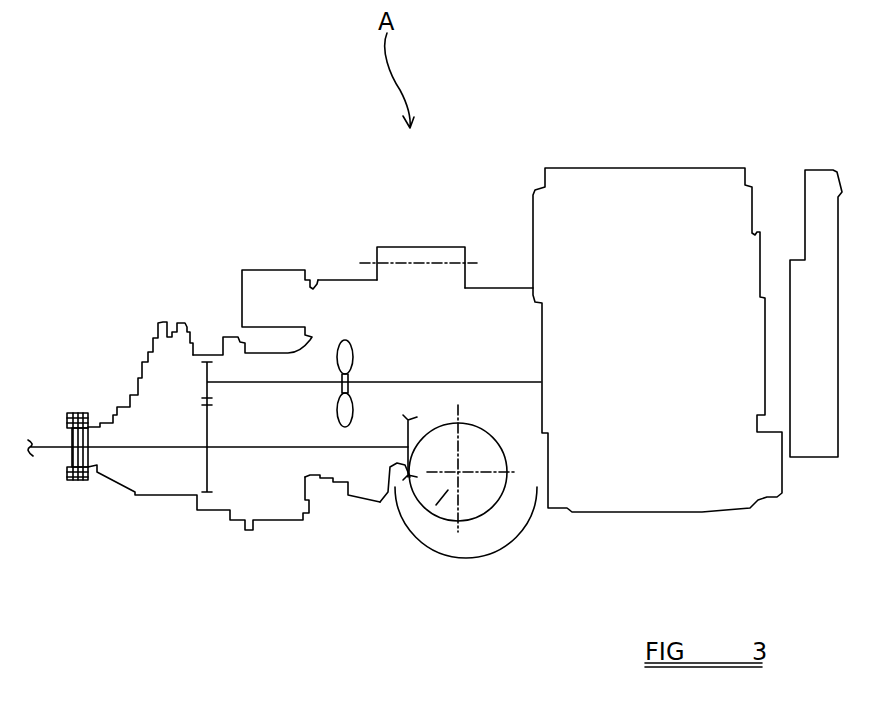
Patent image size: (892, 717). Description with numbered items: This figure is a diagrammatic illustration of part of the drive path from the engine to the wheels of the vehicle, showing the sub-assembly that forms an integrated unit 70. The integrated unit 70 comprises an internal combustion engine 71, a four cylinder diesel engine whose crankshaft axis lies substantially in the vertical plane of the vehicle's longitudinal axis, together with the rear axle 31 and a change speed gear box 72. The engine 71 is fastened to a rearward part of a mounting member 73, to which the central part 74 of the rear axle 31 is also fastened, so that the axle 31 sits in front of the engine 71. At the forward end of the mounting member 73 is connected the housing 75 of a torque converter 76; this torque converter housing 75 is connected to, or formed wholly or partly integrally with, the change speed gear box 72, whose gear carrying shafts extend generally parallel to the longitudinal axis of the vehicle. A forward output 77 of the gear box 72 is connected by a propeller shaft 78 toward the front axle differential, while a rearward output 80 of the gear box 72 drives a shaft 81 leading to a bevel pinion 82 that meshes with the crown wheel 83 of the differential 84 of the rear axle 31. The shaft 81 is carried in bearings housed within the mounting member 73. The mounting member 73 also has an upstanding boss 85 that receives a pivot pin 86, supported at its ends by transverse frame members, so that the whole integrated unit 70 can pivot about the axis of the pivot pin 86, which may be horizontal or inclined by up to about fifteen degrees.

The rear axle 31 is at (442, 498).
The integrated unit 70 is at (425, 167).
The internal combustion engine 71 is at (623, 168).
The change speed gear box 72 is at (230, 517).
The mounting member 73 is at (497, 288).
The central part of the rear axle 74 is at (499, 552).
The housing of the torque converter 75 is at (318, 282).
The torque converter 76 is at (343, 340).
The forward output 77 is at (82, 480).
The propeller shaft 78 is at (50, 450).
The rearward output 80 is at (255, 452).
The shaft 81 is at (308, 450).
The bevel pinion 82 is at (390, 480).
The crown wheel 83 is at (493, 510).
The differential 84 is at (453, 534).
The upstanding boss 85 is at (443, 247).
The pivot pin 86 is at (408, 263).